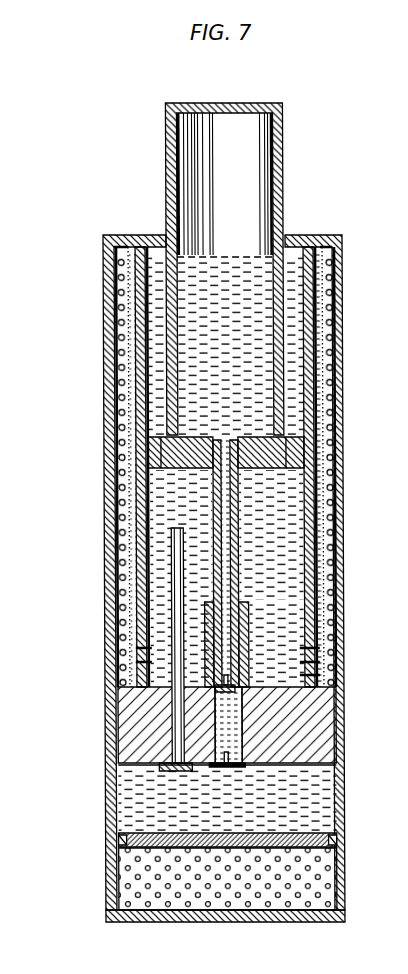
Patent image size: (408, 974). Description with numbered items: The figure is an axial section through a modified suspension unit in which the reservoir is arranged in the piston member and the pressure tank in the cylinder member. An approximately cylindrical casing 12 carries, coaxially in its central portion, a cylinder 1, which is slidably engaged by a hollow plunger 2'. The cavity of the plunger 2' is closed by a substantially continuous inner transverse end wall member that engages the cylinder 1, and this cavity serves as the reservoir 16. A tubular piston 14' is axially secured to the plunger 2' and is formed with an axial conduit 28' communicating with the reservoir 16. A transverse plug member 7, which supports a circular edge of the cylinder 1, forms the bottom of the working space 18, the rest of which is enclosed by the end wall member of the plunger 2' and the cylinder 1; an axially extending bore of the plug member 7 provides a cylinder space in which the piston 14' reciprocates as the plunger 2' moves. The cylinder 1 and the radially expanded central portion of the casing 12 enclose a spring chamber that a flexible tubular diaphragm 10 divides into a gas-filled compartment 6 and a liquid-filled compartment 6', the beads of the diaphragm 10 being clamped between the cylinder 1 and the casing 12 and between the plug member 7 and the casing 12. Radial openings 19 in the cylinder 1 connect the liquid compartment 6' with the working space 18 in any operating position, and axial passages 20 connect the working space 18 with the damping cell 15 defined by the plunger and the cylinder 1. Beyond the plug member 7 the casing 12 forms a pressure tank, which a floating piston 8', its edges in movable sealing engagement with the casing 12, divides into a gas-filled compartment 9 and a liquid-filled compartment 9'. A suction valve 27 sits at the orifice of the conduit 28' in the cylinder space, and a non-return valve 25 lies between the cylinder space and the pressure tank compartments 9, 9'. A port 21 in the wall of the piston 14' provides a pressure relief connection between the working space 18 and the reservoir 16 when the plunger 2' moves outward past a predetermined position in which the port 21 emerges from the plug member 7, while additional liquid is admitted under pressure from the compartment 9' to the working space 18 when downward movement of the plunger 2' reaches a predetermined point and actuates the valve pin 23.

The cylinder 1 is at (110, 520).
The plunger 2' is at (229, 269).
The gas-filled compartment 6 is at (238, 572).
The liquid-filled compartment 6' is at (203, 472).
The plug member 7 is at (125, 725).
The floating piston 8' is at (248, 850).
The gas filled compartment 9 is at (228, 904).
The liquid filled compartment 9' is at (201, 799).
The flexible diaphragm 10 is at (332, 453).
The casing 12 is at (113, 887).
The piston 14' is at (249, 563).
The damping cell 15 is at (294, 303).
The reservoir 16 is at (258, 152).
The working space 18 is at (283, 576).
The radial openings 19 is at (120, 644).
The axial passages 20 is at (137, 447).
The port 21 is at (240, 627).
The valve pin 23 is at (171, 556).
The non-return valve 25 is at (238, 765).
The suction valve 27 is at (222, 693).
The axial conduit 28' is at (182, 577).